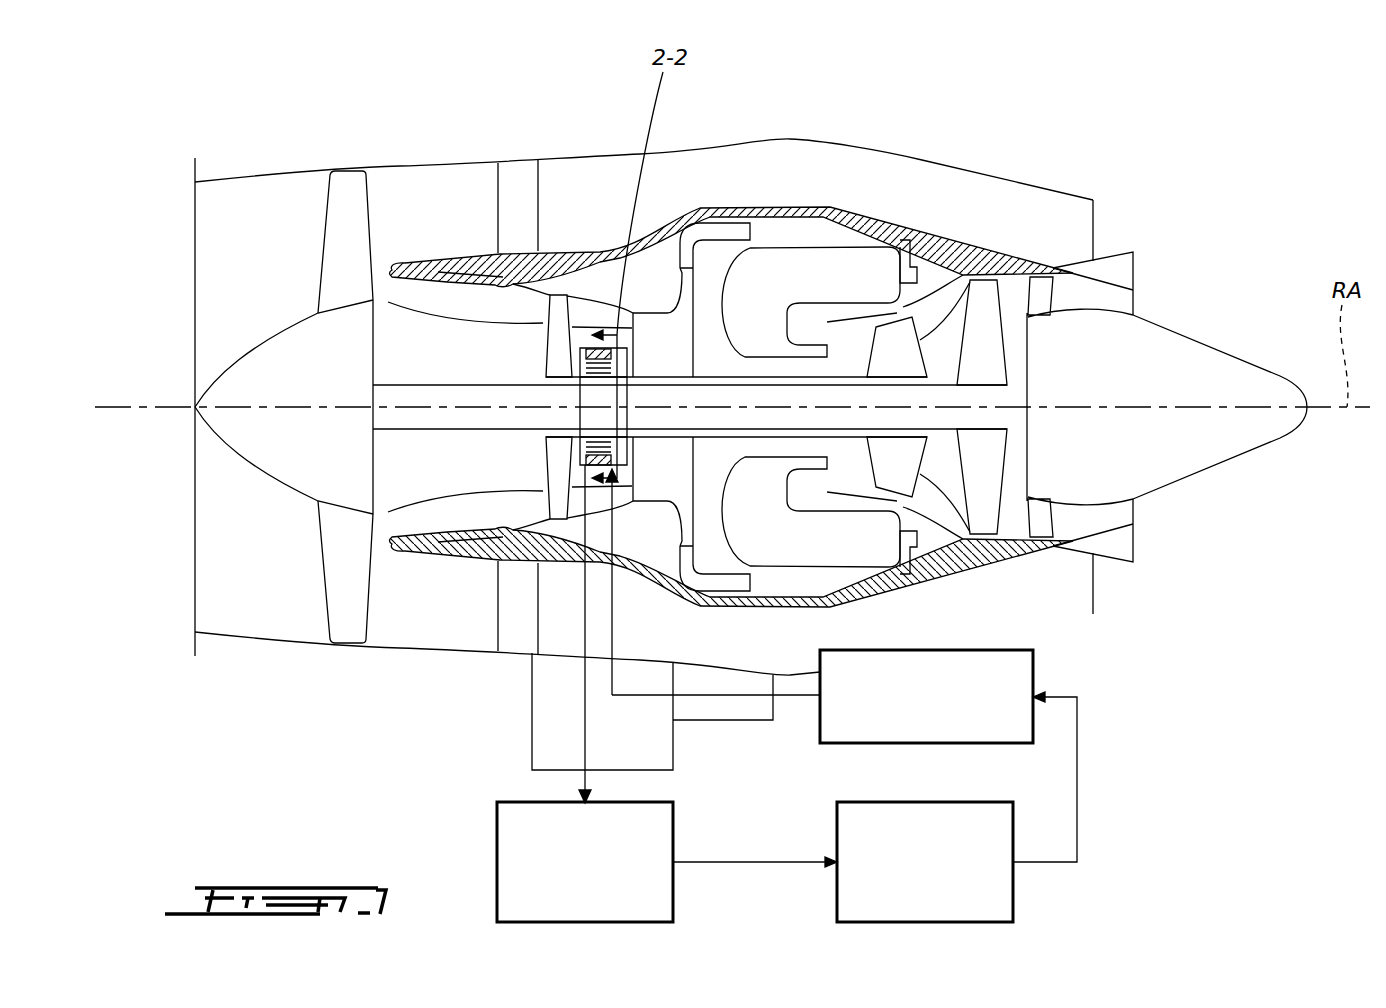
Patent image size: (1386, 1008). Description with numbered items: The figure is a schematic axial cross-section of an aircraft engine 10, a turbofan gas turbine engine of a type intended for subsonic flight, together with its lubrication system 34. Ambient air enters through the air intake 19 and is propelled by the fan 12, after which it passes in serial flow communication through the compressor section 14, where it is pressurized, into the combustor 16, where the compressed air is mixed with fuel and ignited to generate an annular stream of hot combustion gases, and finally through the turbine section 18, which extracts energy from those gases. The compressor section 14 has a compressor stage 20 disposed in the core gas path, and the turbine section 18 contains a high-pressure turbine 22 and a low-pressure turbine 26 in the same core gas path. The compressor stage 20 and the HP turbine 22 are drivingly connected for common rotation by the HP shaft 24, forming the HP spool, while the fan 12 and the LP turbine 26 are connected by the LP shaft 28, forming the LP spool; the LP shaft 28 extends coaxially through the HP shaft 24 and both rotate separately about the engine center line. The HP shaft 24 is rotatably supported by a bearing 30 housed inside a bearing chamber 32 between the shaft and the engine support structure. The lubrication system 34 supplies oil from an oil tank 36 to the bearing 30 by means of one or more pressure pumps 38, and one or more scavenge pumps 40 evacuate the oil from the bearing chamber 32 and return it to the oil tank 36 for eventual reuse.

The aircraft engine 10 is at (926, 104).
The fan 12 is at (343, 559).
The compressor section 14 is at (593, 307).
The combustor 16 is at (810, 267).
The turbine section 18 is at (1028, 485).
The air intake 19 is at (213, 220).
The compressor stage 20 is at (557, 317).
The high-pressure turbine 22 is at (903, 335).
The HP shaft 24 is at (733, 377).
The low-pressure turbine 26 is at (982, 310).
The LP shaft 28 is at (437, 420).
The bearing 30 is at (580, 368).
The bearing chamber 32 is at (613, 347).
The lubrication system 34 is at (448, 738).
The oil tank 36 is at (1013, 907).
The pressure pump 38 is at (816, 728).
The scavenge pump 40 is at (497, 828).